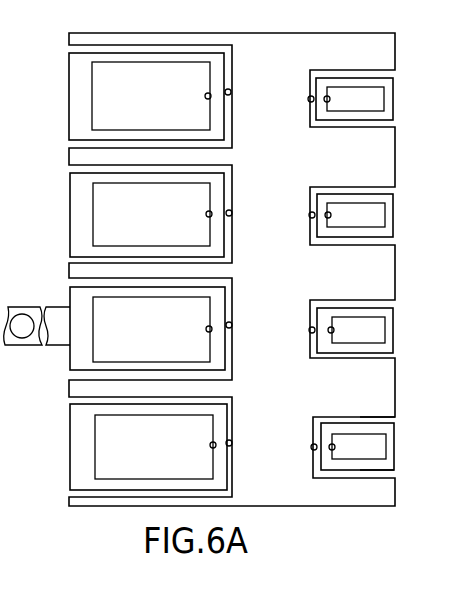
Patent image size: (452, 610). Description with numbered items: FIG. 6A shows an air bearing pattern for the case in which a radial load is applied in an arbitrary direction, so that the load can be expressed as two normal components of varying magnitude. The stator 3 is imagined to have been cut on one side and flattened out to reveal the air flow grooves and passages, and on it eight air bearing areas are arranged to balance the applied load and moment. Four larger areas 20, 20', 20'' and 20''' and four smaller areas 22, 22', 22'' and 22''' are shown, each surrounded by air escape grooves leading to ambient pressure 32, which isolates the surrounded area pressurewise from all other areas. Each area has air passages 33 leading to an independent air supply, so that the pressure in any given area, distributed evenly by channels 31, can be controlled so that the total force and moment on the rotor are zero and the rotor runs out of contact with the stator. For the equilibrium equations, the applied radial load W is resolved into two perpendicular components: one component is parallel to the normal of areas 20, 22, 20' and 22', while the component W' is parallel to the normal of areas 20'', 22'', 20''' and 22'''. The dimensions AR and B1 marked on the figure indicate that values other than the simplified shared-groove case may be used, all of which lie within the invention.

The stator 3 is at (281, 106).
The air bearing area 20 is at (146, 96).
The air bearing area 20' is at (147, 328).
The air bearing area 20'' is at (147, 215).
The air bearing area 20''' is at (148, 447).
The air bearing area 22 is at (355, 330).
The air bearing area 22' is at (354, 99).
The air bearing area 22'' is at (357, 446).
The air bearing area 22''' is at (355, 215).
The channels 31 is at (377, 417).
The ambient pressure 32 is at (231, 90).
The air passages 33 is at (205, 98).
The radial load W is at (37, 347).
The radial load component W' is at (21, 274).
The dimension AR is at (43, 52).
The dimension B1 is at (413, 75).